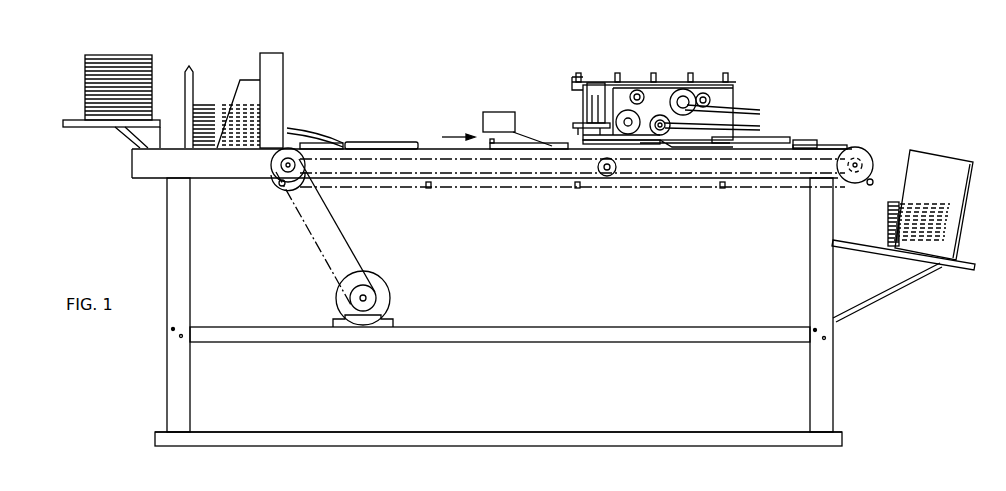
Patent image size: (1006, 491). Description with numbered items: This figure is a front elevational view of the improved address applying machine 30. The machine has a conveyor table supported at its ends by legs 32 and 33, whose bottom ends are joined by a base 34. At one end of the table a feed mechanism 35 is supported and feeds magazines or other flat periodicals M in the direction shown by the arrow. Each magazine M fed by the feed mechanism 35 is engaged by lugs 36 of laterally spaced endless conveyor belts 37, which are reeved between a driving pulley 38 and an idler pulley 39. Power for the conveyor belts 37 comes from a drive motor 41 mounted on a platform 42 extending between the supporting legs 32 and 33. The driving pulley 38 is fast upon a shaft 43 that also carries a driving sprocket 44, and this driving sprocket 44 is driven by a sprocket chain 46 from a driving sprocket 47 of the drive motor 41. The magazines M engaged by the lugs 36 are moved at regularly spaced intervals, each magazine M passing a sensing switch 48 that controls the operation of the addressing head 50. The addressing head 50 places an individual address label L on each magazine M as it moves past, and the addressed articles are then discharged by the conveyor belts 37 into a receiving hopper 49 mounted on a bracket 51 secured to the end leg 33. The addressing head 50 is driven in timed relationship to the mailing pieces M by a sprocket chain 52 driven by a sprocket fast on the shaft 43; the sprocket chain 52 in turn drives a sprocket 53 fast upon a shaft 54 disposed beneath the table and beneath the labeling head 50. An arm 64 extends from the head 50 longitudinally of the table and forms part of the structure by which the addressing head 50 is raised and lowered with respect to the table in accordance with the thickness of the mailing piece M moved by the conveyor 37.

The addressing machine 30 is at (150, 385).
The leg 32 is at (190, 399).
The leg 33 is at (830, 384).
The base 34 is at (437, 432).
The feed mechanism 35 is at (213, 70).
The lugs 36 is at (350, 142).
The endless conveyor belts 37 is at (313, 142).
The driving pulley 38 is at (278, 182).
The idler pulley 39 is at (858, 185).
The drive motor 41 is at (375, 317).
The platform 42 is at (631, 328).
The shaft 43 is at (281, 188).
The driving sprocket 44 is at (272, 166).
The sprocket chain 46 is at (345, 240).
The driving sprocket 47 is at (390, 296).
The sensing switch 48 is at (520, 140).
The receiving hopper 49 is at (958, 200).
The addressing head 50 is at (708, 70).
The bracket 51 is at (918, 266).
The sprocket chain 52 is at (445, 185).
The sprocket 53 is at (614, 170).
The shaft 54 is at (607, 177).
The arm 64 is at (770, 137).
The address label L is at (822, 145).
The magazine M is at (130, 55).